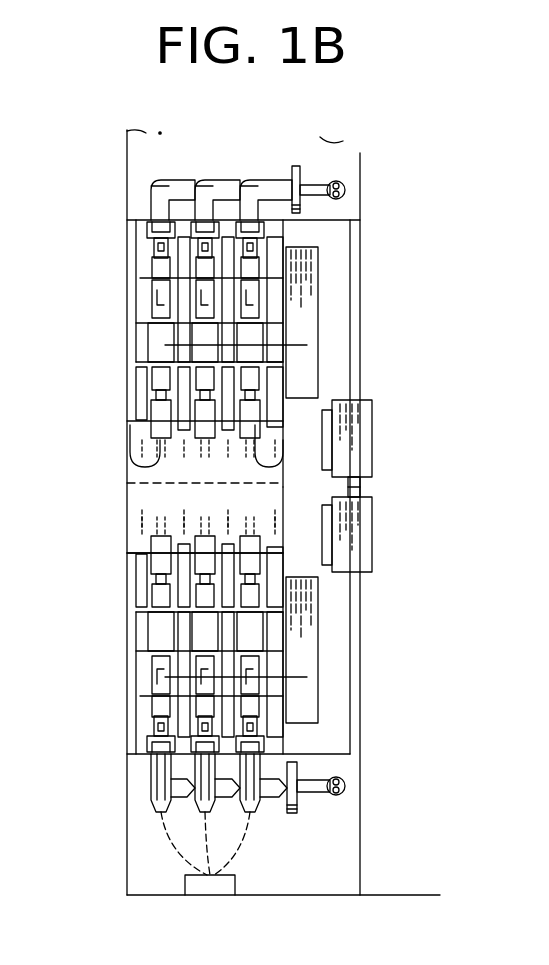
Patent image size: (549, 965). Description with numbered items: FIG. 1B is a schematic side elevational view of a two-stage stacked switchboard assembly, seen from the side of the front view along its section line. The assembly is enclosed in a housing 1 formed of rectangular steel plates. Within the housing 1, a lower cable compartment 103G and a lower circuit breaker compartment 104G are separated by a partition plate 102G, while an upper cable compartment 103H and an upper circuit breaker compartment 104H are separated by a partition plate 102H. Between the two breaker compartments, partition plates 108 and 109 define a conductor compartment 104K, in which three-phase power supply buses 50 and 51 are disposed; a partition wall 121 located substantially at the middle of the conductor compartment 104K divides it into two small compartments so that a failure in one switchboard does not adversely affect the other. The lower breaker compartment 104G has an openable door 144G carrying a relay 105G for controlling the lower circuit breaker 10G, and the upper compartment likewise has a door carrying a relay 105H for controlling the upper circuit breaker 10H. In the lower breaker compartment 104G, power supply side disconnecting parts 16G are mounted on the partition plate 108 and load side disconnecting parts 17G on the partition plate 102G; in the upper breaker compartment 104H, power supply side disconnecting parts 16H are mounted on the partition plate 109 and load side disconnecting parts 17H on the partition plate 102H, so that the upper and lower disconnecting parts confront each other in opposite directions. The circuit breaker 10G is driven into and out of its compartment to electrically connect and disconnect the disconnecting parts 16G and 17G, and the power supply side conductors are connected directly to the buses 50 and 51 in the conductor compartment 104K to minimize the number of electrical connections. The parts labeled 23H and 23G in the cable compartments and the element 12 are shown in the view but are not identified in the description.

The housing 1 is at (361, 157).
The fuel supply pipes (H side) 23H is at (263, 183).
The fuel supply pipes / nozzles (G side) 23G is at (313, 792).
The upper cable compartment 103H is at (140, 170).
The lower cable compartment 103G is at (330, 822).
The partition plate 102H is at (338, 221).
The partition plate 102G is at (338, 754).
The upper circuit breaker 10H is at (300, 282).
The lower circuit breaker 10G is at (300, 648).
The upper circuit breaker compartment 104H is at (333, 325).
The lower circuit breaker compartment 104G is at (333, 697).
The conductor compartment 104K is at (128, 465).
The relay 105H is at (370, 420).
The relay 105G is at (367, 538).
The openable door 144G is at (353, 612).
The three-phase power supply bus 51 is at (283, 472).
The three-phase power supply bus 50 is at (250, 532).
The load side disconnecting parts 17H is at (146, 290).
The load side disconnecting parts 17G is at (146, 727).
The power supply side disconnecting parts 16H is at (145, 445).
The power supply side disconnecting parts 16G is at (147, 588).
The fuel rail 12 is at (158, 378).
The partition plate 109 is at (134, 423).
The partition wall 121 is at (138, 490).
The partition plate 108 is at (133, 555).